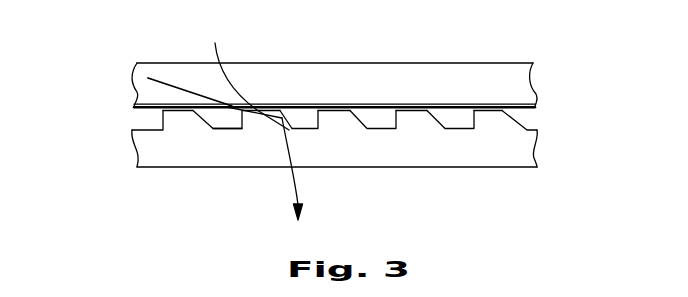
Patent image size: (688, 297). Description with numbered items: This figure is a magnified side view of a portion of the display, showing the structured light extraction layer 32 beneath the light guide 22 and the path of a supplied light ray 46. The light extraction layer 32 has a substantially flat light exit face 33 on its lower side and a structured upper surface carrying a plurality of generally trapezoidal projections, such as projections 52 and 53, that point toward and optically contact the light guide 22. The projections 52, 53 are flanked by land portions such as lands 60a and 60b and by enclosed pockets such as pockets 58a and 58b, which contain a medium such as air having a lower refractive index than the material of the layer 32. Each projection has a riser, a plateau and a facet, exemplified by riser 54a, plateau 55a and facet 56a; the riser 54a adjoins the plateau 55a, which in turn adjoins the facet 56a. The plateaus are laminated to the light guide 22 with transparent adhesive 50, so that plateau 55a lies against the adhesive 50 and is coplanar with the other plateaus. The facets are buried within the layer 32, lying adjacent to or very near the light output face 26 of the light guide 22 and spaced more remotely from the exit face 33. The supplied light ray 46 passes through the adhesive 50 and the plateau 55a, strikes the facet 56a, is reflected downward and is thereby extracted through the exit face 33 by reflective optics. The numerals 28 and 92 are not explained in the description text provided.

The light guide 22 is at (319, 54).
The light output face 26 is at (147, 101).
The edge of upper plate 28 is at (137, 70).
The light extraction layer 32 is at (336, 126).
The light exit face 33 is at (480, 168).
The supplied light ray 46 is at (170, 99).
The transparent adhesive 50 is at (148, 116).
The projection 52 is at (257, 120).
The projection 53 is at (339, 117).
The riser 54a is at (232, 106).
The plateau 55a is at (244, 75).
The facet 56a is at (280, 111).
The pocket 58a is at (217, 115).
The pocket 58b is at (308, 112).
The land portion 60a is at (228, 130).
The land portion 60b is at (307, 113).
The recess 92 is at (146, 124).